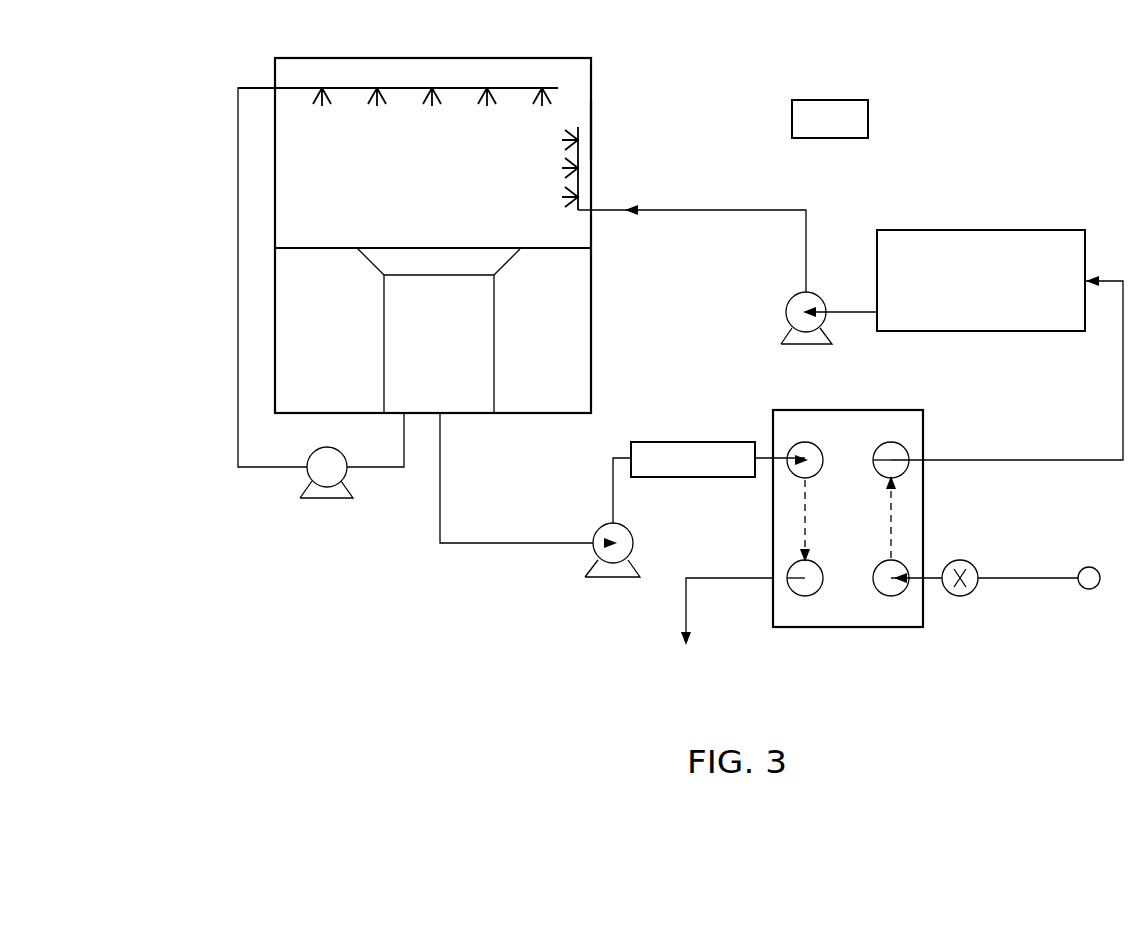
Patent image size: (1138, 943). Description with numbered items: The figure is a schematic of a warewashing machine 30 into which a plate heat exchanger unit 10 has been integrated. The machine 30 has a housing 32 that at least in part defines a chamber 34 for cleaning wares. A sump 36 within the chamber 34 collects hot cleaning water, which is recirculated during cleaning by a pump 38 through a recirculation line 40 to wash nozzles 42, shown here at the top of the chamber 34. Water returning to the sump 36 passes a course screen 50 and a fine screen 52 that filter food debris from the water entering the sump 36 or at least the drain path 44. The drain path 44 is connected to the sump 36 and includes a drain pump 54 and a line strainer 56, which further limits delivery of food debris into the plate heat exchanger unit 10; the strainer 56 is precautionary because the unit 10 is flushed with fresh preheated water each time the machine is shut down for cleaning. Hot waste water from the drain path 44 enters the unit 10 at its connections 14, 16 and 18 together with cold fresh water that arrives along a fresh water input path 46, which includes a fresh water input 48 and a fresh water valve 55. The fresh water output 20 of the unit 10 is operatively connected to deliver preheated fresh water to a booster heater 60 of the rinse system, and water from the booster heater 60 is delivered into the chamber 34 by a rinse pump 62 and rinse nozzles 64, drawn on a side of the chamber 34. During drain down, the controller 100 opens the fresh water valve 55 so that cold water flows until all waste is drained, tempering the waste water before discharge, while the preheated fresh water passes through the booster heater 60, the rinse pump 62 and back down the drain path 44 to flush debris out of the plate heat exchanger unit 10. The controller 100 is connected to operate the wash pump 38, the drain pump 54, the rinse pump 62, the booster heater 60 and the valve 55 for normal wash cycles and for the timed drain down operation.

The plate heat exchanger unit 10 is at (850, 633).
The first valve 14 is at (805, 442).
The second valve 16 is at (805, 596).
The third valve 18 is at (891, 596).
The fresh water output 20 is at (891, 442).
The machine 30 is at (638, 56).
The housing 32 is at (592, 128).
The chamber 34 is at (418, 208).
The sump 36 is at (397, 336).
The pump 38 is at (325, 499).
The recirculation line 40 is at (237, 281).
The wash nozzles 42 is at (383, 96).
The drain path 44 is at (431, 555).
The fresh water input path 46 is at (1030, 600).
The fresh water input 48 is at (1089, 567).
The course screen 50 is at (507, 263).
The fine screen 52 is at (494, 343).
The drain pump 54 is at (634, 545).
The fresh water valve 55 is at (960, 560).
The line strainer 56 is at (690, 442).
The booster heater 60 is at (978, 230).
The rinse pump 62 is at (786, 312).
The rinse nozzles 64 is at (579, 178).
The controller 100 is at (851, 132).